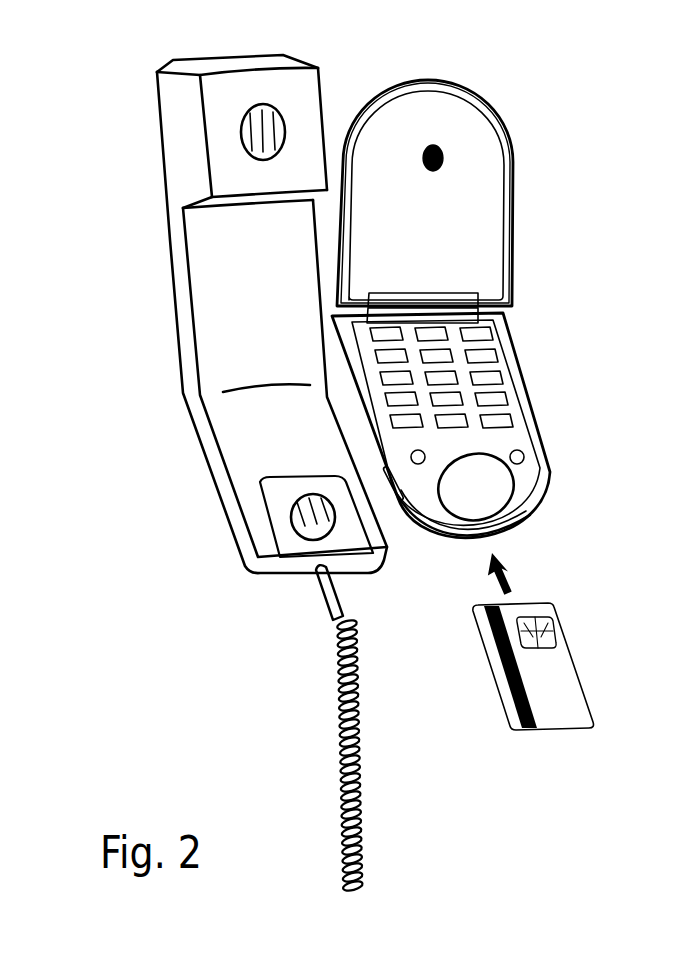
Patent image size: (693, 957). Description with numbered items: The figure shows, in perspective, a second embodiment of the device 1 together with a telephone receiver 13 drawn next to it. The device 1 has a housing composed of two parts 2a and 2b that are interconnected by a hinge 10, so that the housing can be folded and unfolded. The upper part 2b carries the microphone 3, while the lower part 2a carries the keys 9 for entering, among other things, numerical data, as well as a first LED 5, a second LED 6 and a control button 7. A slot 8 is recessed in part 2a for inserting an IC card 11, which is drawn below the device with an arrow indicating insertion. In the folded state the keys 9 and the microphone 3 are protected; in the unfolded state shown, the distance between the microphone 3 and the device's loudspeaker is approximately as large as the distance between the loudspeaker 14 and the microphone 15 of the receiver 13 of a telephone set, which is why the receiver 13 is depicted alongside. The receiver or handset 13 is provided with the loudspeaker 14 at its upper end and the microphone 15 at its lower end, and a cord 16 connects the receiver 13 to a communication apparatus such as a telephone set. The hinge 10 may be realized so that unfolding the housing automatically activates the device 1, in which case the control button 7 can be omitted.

The device 1 is at (496, 361).
The housing part 2a is at (538, 429).
The housing part 2b is at (510, 230).
The microphone 3 is at (445, 157).
The first LED 5 is at (423, 465).
The second LED 6 is at (525, 458).
The control button 7 is at (513, 492).
The slot 8 is at (393, 488).
The keys 9 is at (505, 383).
The hinge 10 is at (493, 308).
The IC card 11 is at (580, 686).
The receiver 13 is at (173, 301).
The loudspeaker 14 is at (241, 132).
The microphone 15 is at (291, 517).
The cord 16 is at (363, 831).